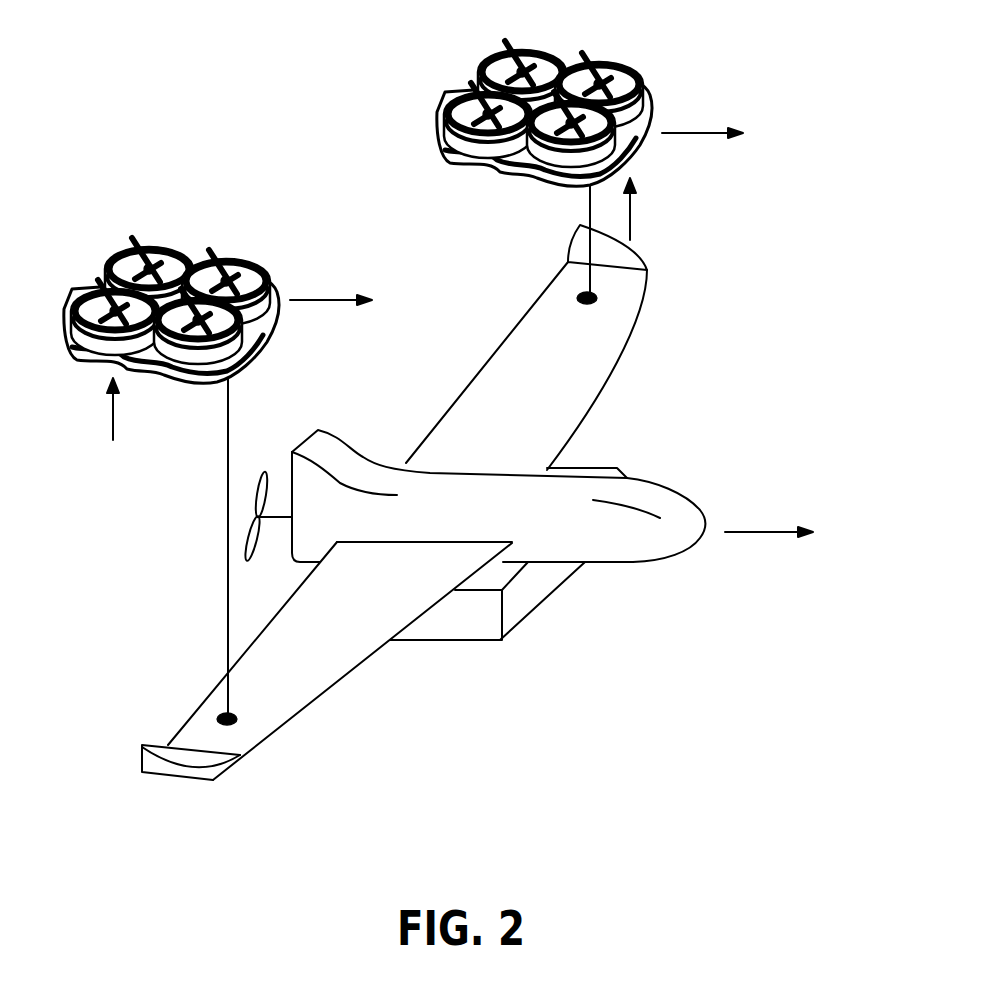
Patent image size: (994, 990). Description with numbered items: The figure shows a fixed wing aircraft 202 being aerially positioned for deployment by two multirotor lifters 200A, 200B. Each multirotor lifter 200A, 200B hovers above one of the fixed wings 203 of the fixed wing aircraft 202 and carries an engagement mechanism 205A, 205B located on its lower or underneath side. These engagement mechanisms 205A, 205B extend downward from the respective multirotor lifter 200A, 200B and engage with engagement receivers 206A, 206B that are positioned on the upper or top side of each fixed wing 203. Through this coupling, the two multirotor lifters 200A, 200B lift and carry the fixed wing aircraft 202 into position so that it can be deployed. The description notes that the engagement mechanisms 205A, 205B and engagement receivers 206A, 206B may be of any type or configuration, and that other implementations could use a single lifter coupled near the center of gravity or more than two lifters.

The multirotor lifter 200A is at (607, 67).
The multirotor lifter 200B is at (148, 250).
The fixed wing aircraft 202 is at (660, 497).
The fixed wing 203 is at (327, 657).
The engagement mechanism 205A is at (587, 198).
The engagement mechanism 205B is at (228, 478).
The engagement receiver 206A is at (597, 298).
The engagement receiver 206B is at (237, 719).